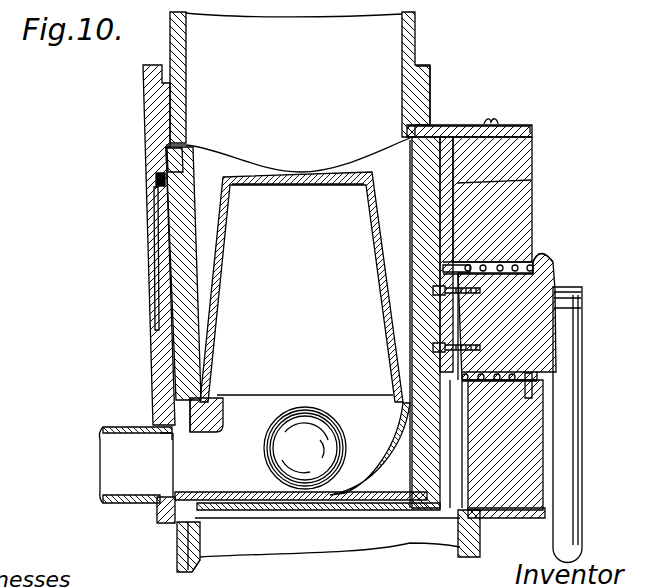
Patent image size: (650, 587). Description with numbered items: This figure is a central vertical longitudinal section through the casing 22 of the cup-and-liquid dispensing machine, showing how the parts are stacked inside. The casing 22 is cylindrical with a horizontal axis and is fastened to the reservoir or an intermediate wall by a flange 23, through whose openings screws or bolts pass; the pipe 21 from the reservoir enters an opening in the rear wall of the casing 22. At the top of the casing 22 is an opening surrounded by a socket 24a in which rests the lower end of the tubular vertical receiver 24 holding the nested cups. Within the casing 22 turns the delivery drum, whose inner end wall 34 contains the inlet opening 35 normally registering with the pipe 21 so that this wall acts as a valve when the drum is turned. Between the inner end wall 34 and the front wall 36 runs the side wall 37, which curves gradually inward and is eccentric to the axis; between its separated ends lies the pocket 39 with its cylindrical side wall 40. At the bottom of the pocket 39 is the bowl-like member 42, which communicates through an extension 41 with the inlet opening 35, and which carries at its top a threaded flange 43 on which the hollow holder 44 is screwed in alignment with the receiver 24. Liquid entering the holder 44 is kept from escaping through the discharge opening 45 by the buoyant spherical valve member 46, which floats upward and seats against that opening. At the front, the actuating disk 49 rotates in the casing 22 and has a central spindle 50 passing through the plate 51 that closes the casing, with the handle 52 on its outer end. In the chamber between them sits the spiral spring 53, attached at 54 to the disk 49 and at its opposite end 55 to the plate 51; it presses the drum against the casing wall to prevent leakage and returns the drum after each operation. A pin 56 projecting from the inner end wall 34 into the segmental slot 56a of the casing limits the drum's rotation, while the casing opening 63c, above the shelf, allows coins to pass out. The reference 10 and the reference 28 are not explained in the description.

The inner wall of casing 10 is at (191, 273).
The pipe 21 is at (100, 465).
The casing 22 is at (177, 540).
The flange 23 is at (145, 133).
The vertical receiver 24 is at (416, 33).
The socket 24a is at (431, 105).
The outlet 28 is at (200, 560).
The inner end wall 34 is at (173, 160).
The inlet opening 35 is at (172, 468).
The front wall 36 is at (432, 137).
The side wall 37 is at (299, 503).
The pocket 39 is at (222, 162).
The cylindrical side wall 40 is at (412, 240).
The extension 41 is at (190, 432).
The bowl-like member 42 is at (372, 449).
The threaded flange 43 is at (220, 398).
The hollow holder 44 is at (376, 190).
The discharge opening 45 is at (322, 184).
The valve member 46 is at (333, 430).
The actuating disk 49 is at (460, 184).
The spindle 50 is at (552, 272).
The plate 51 is at (540, 433).
The handle 52 is at (578, 460).
The spring 53 is at (538, 248).
The spring attachment to disk 54 is at (535, 217).
The spring end 55 is at (540, 390).
The pin 56 is at (156, 181).
The segmental slot 56a is at (152, 205).
The casing opening 63c is at (460, 510).